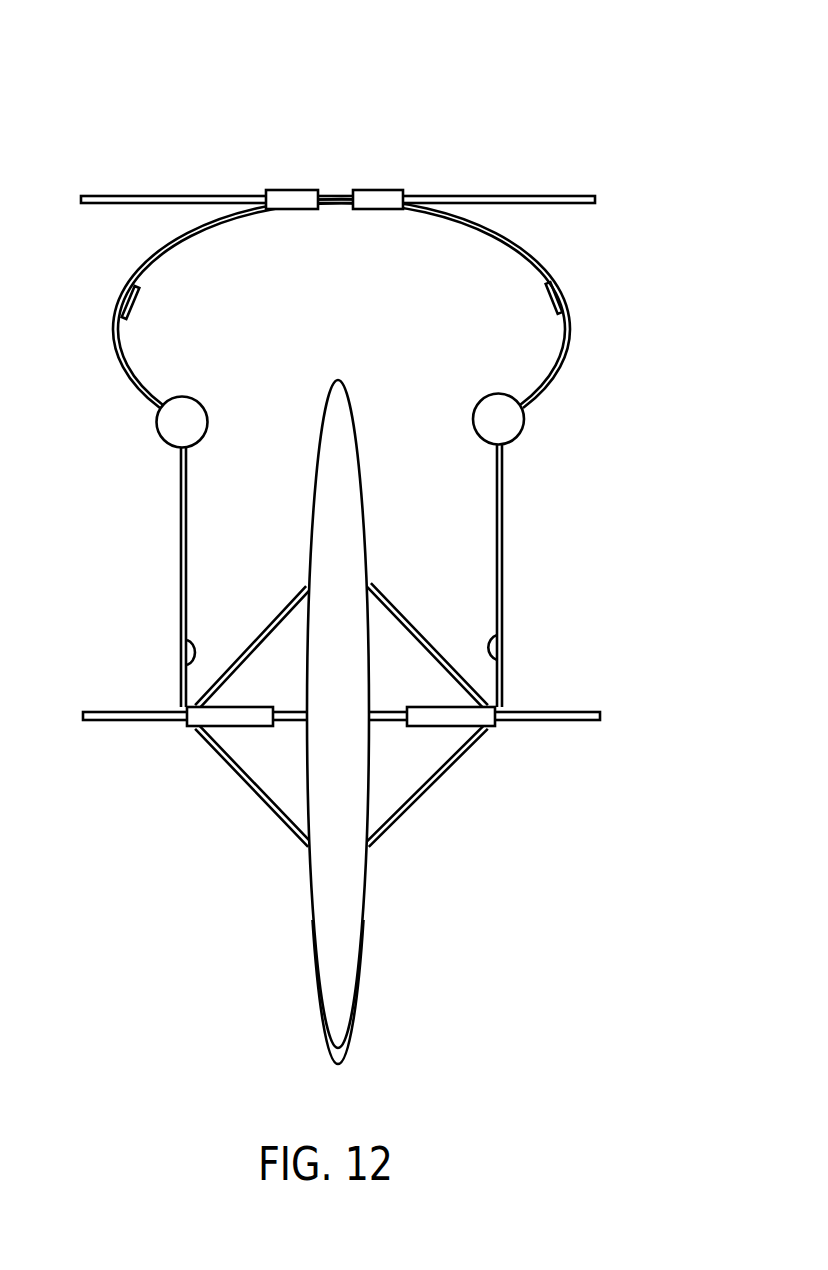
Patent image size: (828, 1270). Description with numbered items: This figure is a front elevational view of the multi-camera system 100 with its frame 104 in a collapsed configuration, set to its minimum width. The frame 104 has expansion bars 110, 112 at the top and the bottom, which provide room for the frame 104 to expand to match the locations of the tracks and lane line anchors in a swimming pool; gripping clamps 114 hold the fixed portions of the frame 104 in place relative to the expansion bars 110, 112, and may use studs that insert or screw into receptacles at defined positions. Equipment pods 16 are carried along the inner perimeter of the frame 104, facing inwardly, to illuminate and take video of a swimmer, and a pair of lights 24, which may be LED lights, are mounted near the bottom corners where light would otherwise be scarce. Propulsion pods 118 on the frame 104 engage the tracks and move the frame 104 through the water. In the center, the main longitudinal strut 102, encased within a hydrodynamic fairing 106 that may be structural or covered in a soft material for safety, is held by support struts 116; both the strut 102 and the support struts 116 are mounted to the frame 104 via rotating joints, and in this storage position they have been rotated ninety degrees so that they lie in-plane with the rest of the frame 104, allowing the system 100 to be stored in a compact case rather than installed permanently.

The multi-camera system 100 is at (312, 93).
The expansion bar 110 is at (138, 195).
The gripping clamp 114 is at (287, 196).
The equipment pod 16 is at (333, 207).
The frame 104 is at (577, 338).
The propulsion pod 118 is at (182, 405).
The main longitudinal strut 102 is at (316, 420).
The support strut 116 is at (257, 638).
The light 24 is at (192, 645).
The expansion bar 112 is at (140, 718).
The hydrodynamic fairing 106 is at (336, 950).